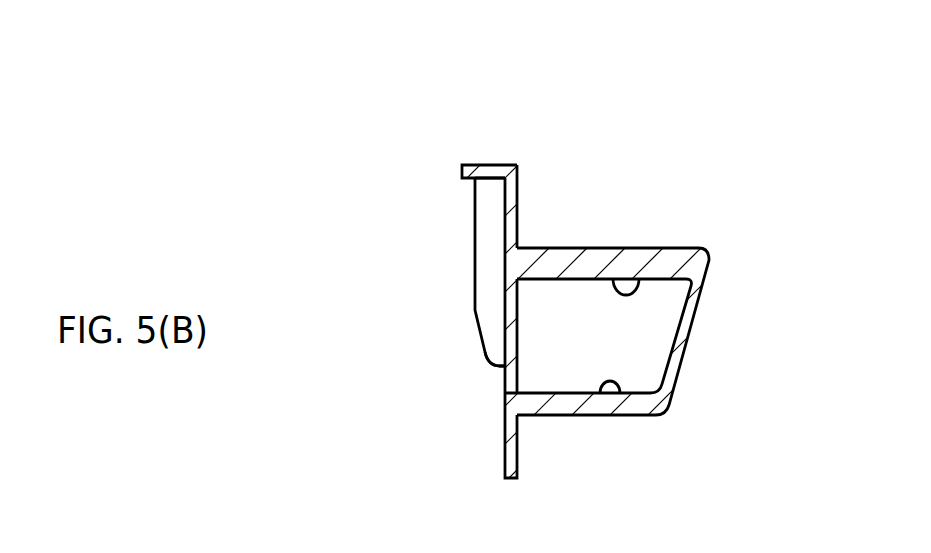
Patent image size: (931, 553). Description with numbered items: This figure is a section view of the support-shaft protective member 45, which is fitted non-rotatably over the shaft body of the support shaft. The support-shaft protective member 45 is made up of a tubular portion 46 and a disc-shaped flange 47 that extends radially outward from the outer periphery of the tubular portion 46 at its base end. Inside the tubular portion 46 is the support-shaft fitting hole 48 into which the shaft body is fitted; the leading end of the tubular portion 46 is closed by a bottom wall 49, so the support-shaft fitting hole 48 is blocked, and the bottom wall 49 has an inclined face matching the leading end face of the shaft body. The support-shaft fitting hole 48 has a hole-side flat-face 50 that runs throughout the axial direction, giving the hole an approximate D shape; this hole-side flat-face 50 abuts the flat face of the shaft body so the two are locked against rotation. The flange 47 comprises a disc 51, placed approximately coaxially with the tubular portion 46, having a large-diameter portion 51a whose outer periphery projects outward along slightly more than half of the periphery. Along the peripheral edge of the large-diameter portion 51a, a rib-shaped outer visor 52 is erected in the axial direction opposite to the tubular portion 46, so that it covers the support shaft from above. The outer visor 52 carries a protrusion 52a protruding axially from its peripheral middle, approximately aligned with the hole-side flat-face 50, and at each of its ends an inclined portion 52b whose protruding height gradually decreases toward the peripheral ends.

The support-shaft protective member 45 is at (668, 203).
The tubular portion 46 is at (603, 248).
The flange 47 is at (518, 197).
The support-shaft fitting hole 48 is at (600, 385).
The bottom wall 49 is at (697, 315).
The hole-side flat-face 50 is at (637, 284).
The disc 51 is at (503, 450).
The large-diameter portion 51a is at (497, 163).
The outer visor 52 is at (483, 230).
The protrusion 52a is at (462, 172).
The inclined portion 52b is at (482, 347).